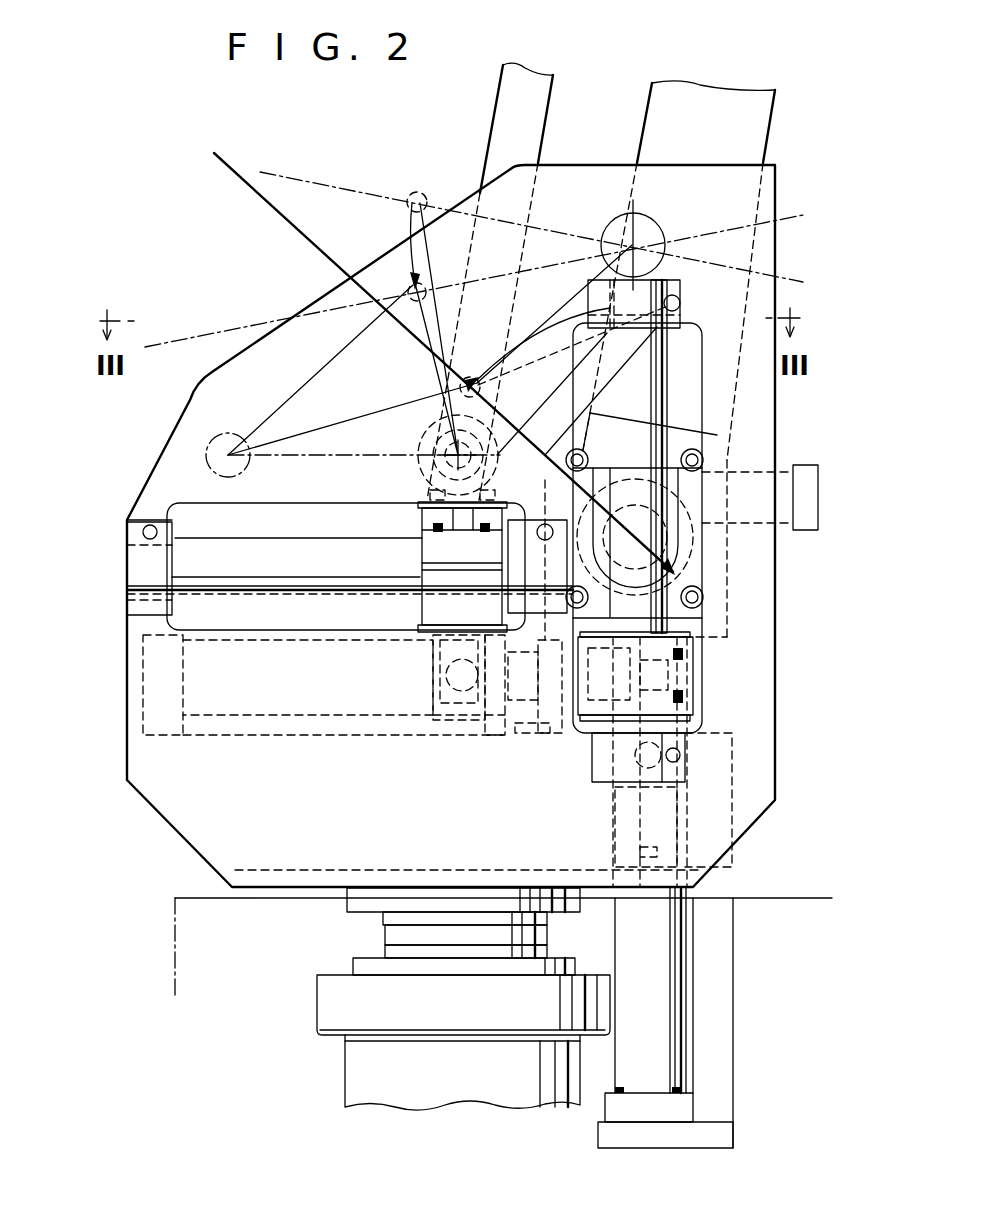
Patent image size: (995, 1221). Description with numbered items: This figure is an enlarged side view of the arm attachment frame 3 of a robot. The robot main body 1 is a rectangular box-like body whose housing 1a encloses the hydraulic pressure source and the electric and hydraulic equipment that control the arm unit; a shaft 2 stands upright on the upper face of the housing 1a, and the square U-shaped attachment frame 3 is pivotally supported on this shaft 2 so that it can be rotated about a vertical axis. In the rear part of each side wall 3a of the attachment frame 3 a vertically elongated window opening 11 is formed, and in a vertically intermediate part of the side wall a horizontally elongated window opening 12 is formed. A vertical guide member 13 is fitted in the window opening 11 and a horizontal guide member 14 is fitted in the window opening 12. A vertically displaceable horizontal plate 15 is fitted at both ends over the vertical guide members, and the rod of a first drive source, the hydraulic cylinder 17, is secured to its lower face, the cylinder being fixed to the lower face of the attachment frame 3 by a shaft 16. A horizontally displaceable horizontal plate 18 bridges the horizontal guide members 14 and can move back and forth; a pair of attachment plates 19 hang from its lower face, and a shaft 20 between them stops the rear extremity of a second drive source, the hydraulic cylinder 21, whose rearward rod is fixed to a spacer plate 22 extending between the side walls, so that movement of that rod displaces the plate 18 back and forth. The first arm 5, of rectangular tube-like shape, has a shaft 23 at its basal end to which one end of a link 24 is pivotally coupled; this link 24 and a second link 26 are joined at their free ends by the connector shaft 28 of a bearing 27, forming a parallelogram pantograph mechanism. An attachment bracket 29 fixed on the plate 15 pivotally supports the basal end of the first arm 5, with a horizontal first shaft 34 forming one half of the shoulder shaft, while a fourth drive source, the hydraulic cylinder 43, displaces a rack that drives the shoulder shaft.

The robot main body 1 is at (193, 899).
The housing 1a is at (172, 942).
The shaft 2 is at (383, 941).
The attachment frame 3 is at (153, 453).
The side wall 3a is at (130, 697).
The first arm 5 is at (768, 124).
The window opening 11 is at (704, 402).
The window opening 12 is at (270, 510).
The vertical guide member 13 is at (660, 402).
The horizontal guide member 14 is at (300, 585).
The horizontal plate 15 is at (688, 680).
The shaft 16 is at (592, 770).
The hydraulic cylinder 17 is at (620, 958).
The horizontal plate 18 is at (422, 560).
The attachment plate 19 is at (492, 722).
The shaft 20 is at (462, 718).
The hydraulic cylinder 21 is at (298, 700).
The spacer plate 22 is at (530, 725).
The shaft 23 is at (681, 302).
The link 24 is at (550, 376).
The link 26 is at (505, 100).
The bearing 27 is at (418, 485).
The connector shaft 28 is at (430, 441).
The attachment bracket 29 is at (722, 610).
The first shaft 34 is at (695, 556).
The hydraulic cylinder 43 is at (805, 465).